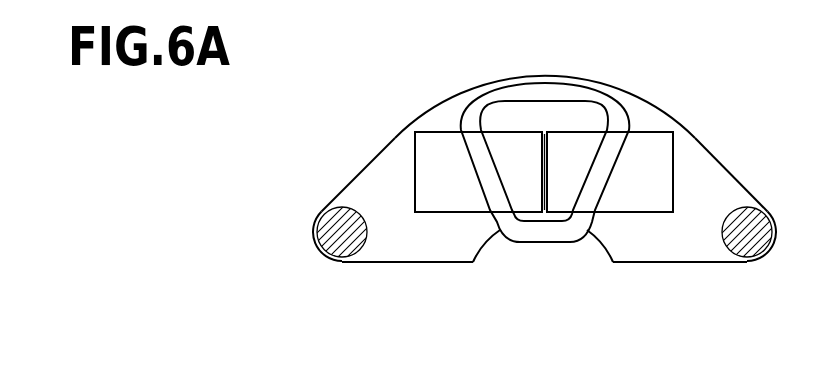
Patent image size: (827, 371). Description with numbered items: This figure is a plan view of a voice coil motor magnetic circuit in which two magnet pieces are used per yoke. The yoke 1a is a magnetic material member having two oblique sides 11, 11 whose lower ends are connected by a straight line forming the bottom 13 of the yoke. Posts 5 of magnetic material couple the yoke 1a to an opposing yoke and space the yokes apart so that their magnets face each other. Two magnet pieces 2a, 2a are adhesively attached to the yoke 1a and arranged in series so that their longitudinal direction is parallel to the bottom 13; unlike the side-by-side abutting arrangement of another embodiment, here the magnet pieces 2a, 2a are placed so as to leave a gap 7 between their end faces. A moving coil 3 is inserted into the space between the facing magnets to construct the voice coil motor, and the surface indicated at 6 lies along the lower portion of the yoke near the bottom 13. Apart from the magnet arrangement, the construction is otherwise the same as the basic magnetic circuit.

The yoke 1a is at (397, 160).
The oblique side 11 is at (370, 163).
The bottom 13 is at (413, 263).
The bottom surface of base 6 is at (647, 263).
The post 5 is at (740, 240).
The magnet piece 2a is at (445, 147).
The moving coil 3 is at (492, 100).
The gap 7 is at (545, 132).